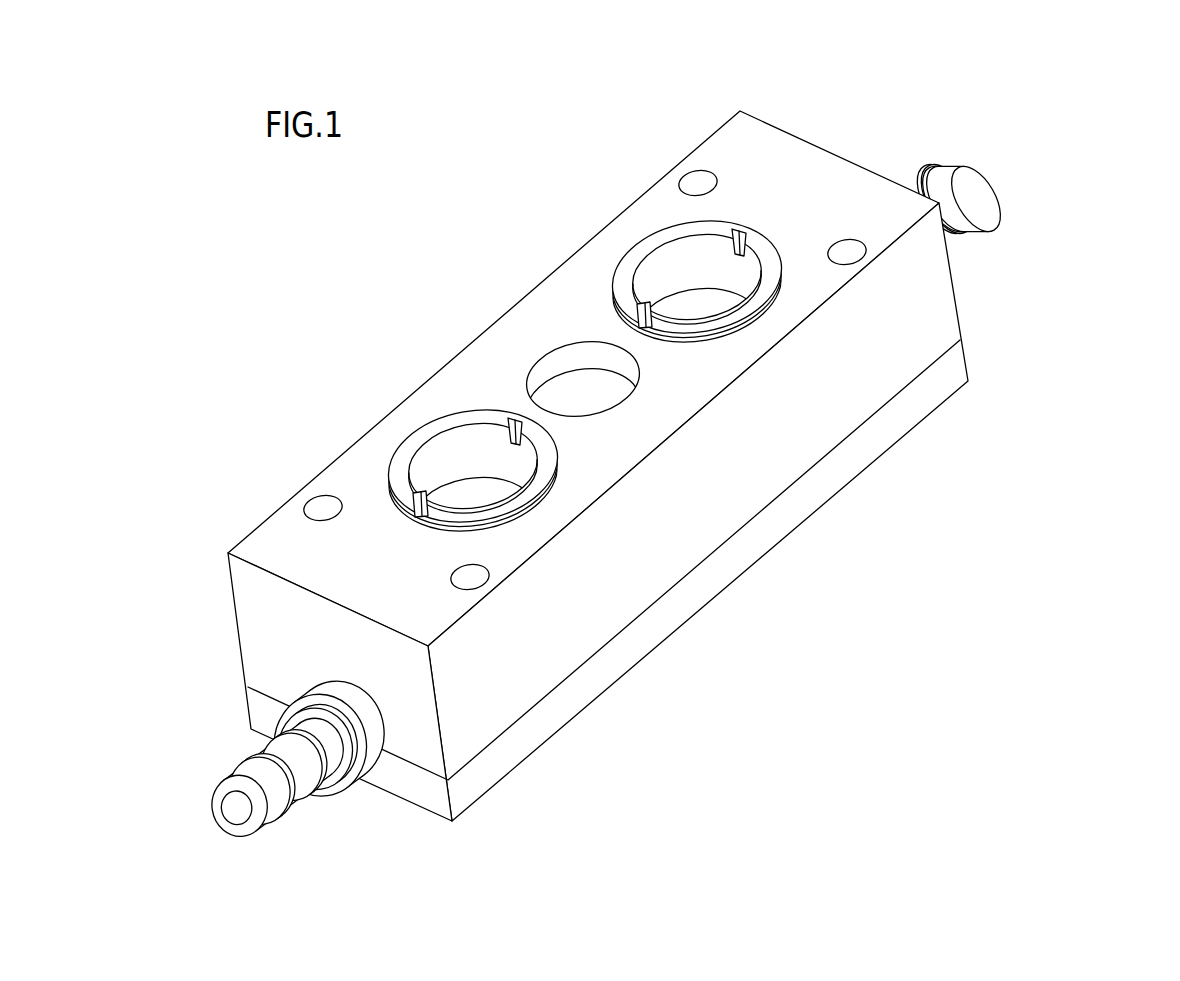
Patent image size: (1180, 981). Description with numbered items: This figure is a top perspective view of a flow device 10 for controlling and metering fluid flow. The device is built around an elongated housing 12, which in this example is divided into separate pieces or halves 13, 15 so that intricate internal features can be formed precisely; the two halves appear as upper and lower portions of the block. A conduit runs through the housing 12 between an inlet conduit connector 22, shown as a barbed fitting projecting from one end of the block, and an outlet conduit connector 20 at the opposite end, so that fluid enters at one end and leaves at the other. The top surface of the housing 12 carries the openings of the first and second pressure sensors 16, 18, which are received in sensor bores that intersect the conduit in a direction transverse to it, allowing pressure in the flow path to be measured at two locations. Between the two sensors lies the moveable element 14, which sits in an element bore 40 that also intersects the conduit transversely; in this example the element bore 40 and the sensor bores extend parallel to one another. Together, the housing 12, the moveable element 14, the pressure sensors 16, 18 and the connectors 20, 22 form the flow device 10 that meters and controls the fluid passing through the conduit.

The flow device 10 is at (696, 412).
The housing 12 is at (770, 123).
The first housing piece 13 is at (944, 295).
The moveable element 14 is at (546, 417).
The second housing piece 15 is at (950, 371).
The first pressure sensor 16 is at (625, 256).
The second pressure sensor 18 is at (395, 452).
The outlet conduit connector 20 is at (926, 180).
The inlet conduit connector 22 is at (372, 771).
The element bore 40 is at (605, 433).